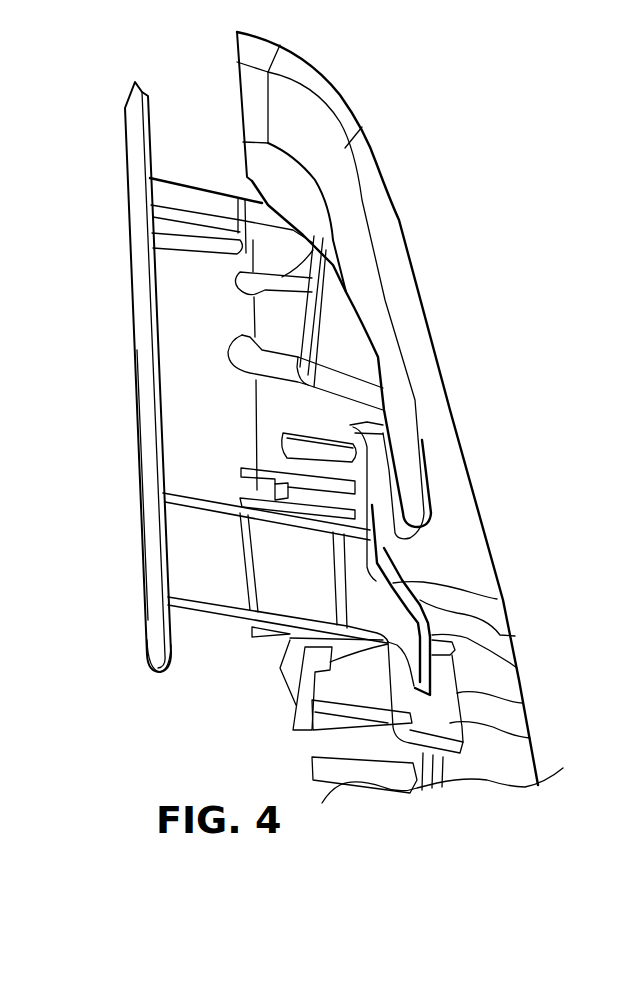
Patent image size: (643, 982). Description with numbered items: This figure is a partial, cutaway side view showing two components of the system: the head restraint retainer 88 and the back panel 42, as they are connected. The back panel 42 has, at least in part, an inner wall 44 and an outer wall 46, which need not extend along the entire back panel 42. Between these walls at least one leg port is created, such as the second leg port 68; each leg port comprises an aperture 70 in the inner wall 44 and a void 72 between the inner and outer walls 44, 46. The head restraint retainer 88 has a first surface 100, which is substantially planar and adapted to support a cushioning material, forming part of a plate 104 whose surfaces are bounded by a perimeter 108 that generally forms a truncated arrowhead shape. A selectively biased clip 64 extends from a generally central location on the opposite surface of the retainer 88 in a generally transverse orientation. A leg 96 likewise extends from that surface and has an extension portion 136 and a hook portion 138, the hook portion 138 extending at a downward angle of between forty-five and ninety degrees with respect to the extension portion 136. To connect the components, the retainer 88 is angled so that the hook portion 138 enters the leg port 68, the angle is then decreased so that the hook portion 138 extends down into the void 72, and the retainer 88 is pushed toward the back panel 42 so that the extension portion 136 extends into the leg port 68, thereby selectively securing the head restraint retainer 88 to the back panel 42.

The back panel 42 is at (403, 277).
The inner wall 44 is at (387, 717).
The outer wall 46 is at (523, 703).
The clip 64 is at (257, 204).
The second leg port 68 is at (497, 599).
The aperture 70 is at (387, 661).
The void 72 is at (530, 738).
The head restraint retainer 88 is at (124, 149).
The leg 96 is at (500, 635).
The first surface 100 is at (130, 281).
The plate 104 is at (147, 417).
The perimeter 108 is at (150, 664).
The extension portion 136 is at (222, 620).
The hook portion 138 is at (517, 668).